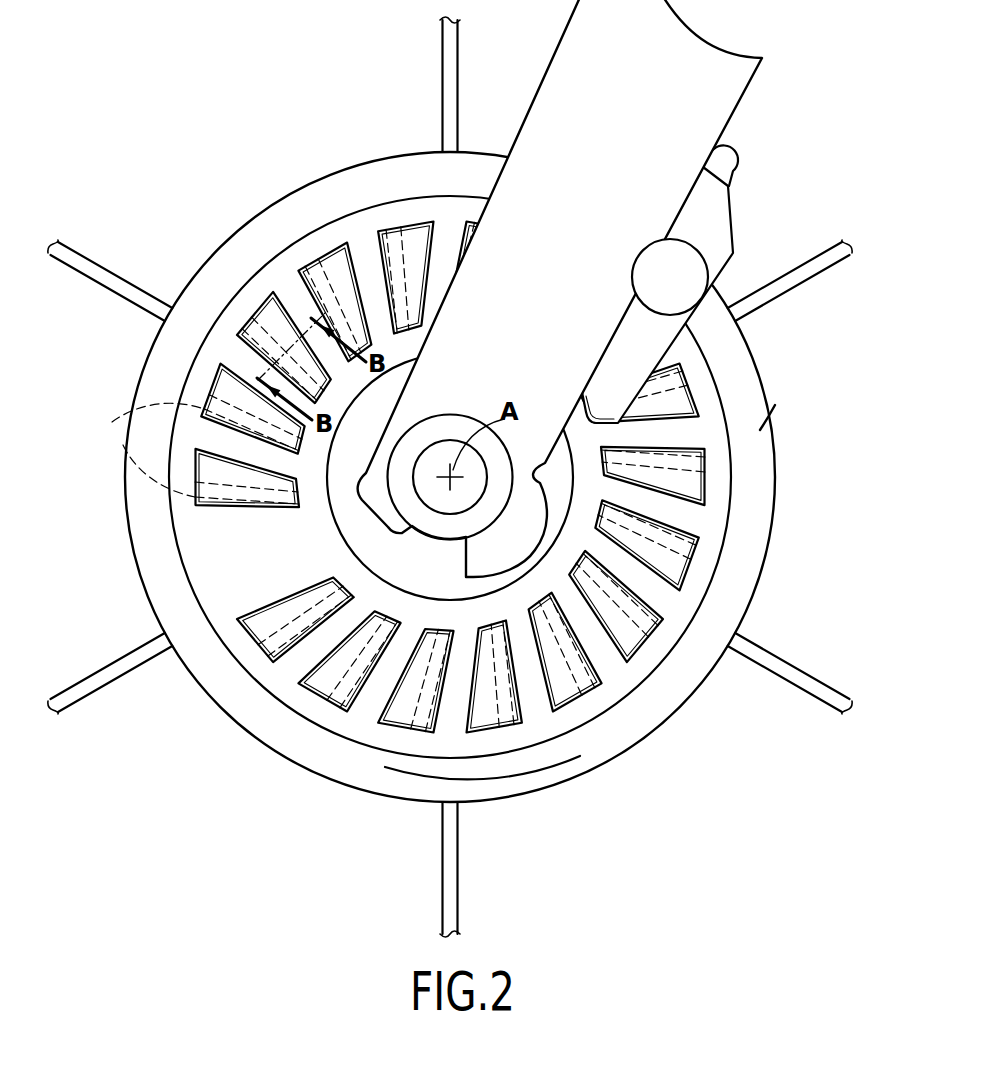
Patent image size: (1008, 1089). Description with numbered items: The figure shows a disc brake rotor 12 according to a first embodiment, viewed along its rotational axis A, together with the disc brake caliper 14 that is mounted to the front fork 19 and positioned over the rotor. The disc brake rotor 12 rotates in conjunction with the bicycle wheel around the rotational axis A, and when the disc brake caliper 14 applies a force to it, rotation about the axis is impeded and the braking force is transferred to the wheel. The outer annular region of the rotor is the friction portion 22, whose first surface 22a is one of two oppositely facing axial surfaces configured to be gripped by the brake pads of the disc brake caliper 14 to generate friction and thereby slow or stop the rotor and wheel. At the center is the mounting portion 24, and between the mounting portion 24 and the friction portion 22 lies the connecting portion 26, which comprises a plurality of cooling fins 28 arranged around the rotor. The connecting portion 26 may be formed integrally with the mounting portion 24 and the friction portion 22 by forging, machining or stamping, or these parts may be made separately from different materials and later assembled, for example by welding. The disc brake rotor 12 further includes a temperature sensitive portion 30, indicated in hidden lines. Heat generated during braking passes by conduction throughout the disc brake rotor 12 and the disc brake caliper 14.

The disc brake rotor 12 is at (775, 405).
The disc brake caliper 14 is at (727, 219).
The front fork 19 is at (707, 113).
The friction portion 22 is at (647, 758).
The first surface 22a is at (563, 766).
The mounting portion 24 is at (430, 578).
The connecting portion 26 is at (290, 660).
The cooling fins 28 is at (228, 387).
The temperature sensitive portion 30 is at (165, 406).